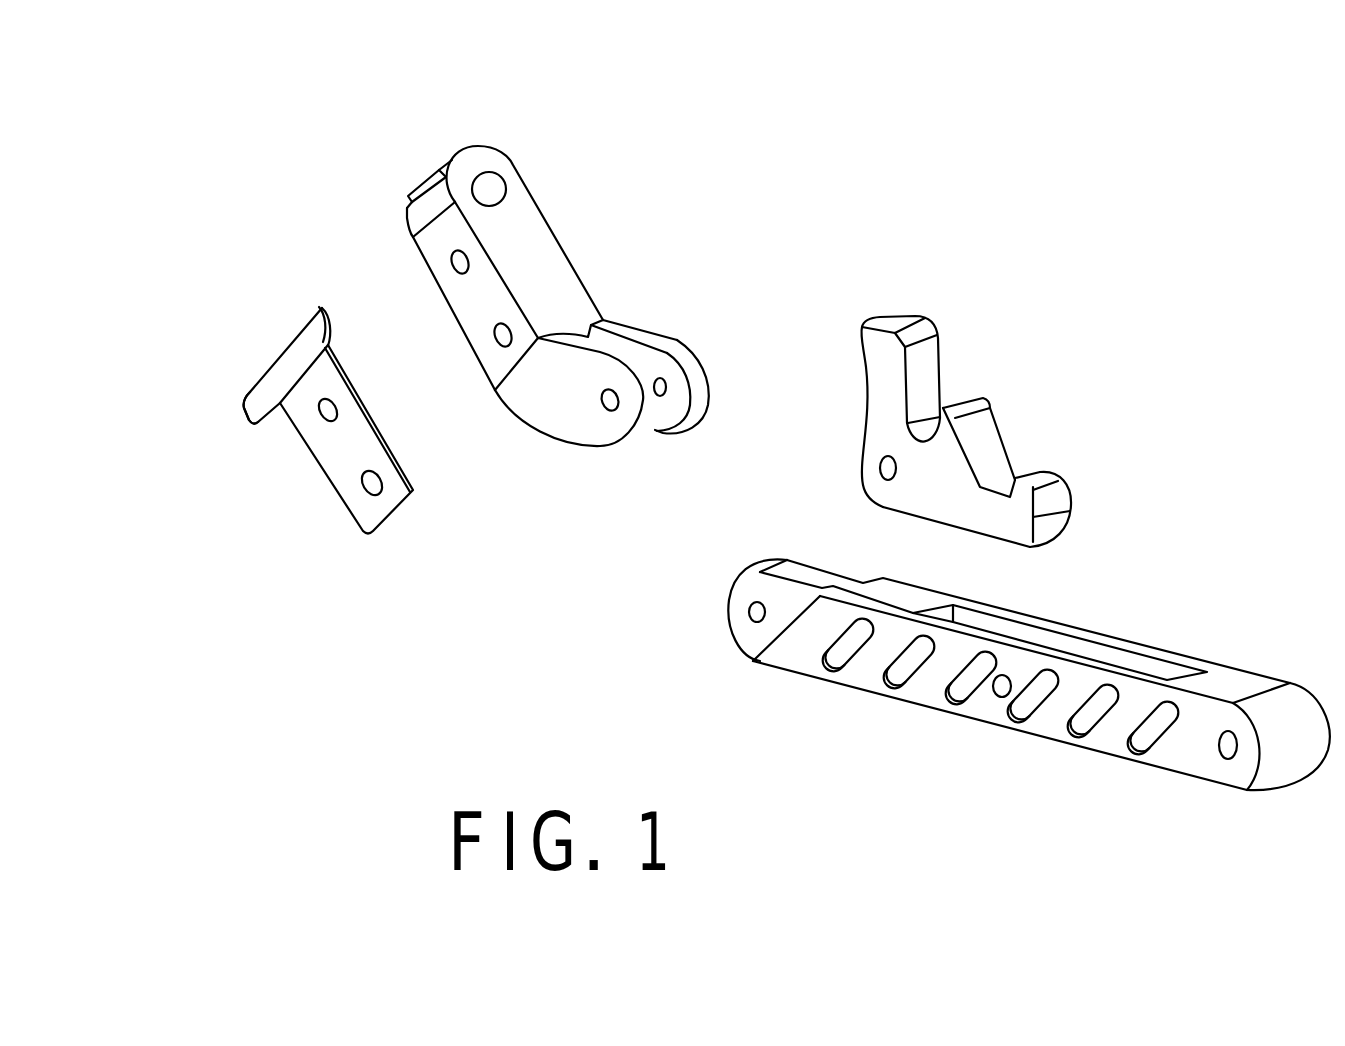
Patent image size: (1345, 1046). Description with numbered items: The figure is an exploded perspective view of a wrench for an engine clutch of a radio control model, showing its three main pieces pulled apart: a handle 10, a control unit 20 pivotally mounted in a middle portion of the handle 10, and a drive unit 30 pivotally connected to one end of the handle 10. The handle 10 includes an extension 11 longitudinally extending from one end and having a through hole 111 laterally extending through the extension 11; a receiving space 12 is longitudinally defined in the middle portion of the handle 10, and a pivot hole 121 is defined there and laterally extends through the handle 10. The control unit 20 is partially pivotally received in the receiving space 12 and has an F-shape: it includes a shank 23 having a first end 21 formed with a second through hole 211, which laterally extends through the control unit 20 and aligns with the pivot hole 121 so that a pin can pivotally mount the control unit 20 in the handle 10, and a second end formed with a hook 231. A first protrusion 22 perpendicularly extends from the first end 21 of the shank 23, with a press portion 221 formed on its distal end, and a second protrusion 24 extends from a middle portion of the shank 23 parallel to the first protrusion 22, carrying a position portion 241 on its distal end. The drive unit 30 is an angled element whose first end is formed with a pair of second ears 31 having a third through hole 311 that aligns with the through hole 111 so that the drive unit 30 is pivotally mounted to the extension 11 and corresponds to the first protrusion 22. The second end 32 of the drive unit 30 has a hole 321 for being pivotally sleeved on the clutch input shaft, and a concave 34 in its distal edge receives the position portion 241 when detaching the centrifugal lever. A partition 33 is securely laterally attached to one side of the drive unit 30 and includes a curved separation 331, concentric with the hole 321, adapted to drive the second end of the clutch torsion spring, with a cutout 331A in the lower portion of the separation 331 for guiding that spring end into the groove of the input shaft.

The handle 10 is at (1212, 643).
The extension 11 is at (732, 583).
The through hole 111 is at (752, 620).
The receiving space 12 is at (1110, 643).
The pivot hole 121 is at (995, 694).
The control unit 20 is at (1005, 393).
The first end 21 is at (872, 450).
The second through hole 211 is at (880, 472).
The first protrusion 22 is at (885, 388).
The press portion 221 is at (900, 323).
The shank 23 is at (973, 512).
The hook 231 is at (1059, 472).
The second protrusion 24 is at (987, 452).
The position portion 241 is at (973, 402).
The drive unit 30 is at (615, 262).
The second ears 31 is at (701, 360).
The third through hole 311 is at (607, 400).
The drive unit second end 32 is at (538, 268).
The hole 321 is at (481, 188).
The partition 33 is at (347, 450).
The curved separation 331 is at (293, 362).
The cutout 331A is at (247, 400).
The concave 34 is at (433, 190).